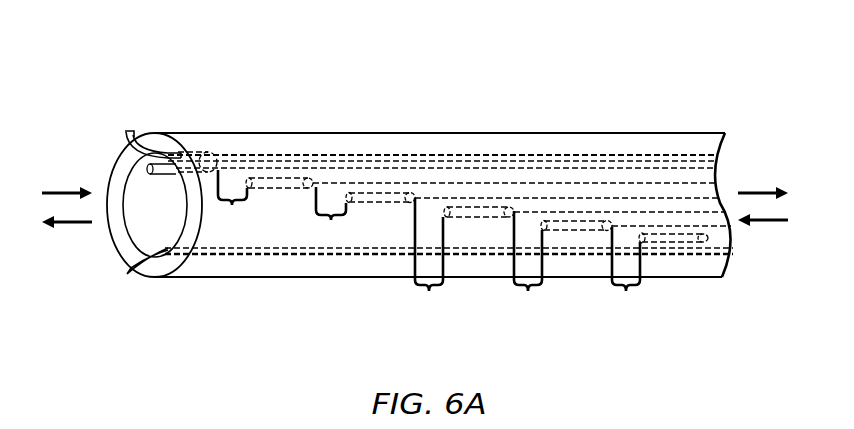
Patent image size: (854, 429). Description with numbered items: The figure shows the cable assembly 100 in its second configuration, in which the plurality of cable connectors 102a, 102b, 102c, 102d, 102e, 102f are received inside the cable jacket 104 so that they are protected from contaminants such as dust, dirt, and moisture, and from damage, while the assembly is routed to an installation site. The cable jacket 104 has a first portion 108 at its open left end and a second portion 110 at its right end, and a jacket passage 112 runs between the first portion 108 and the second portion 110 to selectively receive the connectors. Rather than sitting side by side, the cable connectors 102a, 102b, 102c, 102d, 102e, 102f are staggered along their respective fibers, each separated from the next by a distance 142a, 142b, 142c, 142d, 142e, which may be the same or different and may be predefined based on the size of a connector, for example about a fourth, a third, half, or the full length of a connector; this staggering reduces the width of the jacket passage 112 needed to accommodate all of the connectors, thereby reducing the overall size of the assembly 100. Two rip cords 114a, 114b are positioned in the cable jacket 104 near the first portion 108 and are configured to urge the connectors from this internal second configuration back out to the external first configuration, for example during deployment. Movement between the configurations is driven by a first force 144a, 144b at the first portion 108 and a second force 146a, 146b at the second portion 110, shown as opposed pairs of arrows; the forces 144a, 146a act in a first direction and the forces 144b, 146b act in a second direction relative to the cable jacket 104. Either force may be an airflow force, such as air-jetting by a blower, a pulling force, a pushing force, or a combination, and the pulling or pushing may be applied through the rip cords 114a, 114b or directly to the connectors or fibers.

The assembly 100 is at (613, 58).
The cable connector 102a is at (198, 152).
The cable connector 102b is at (283, 175).
The cable connector 102c is at (376, 189).
The cable connector 102d is at (472, 204).
The cable connector 102e is at (572, 216).
The cable connector 102f is at (669, 231).
The cable jacket 104 is at (173, 129).
The first portion 108 is at (110, 152).
The second portion 110 is at (728, 137).
The jacket passage 112 is at (697, 257).
The rip cord 114a is at (128, 131).
The rip cord 114b is at (129, 275).
The distance 142a is at (229, 201).
The distance 142b is at (330, 218).
The distance 142c is at (428, 260).
The distance 142d is at (528, 267).
The distance 142e is at (624, 276).
The first force 144a is at (58, 190).
The first force 144b is at (70, 225).
The second force 146a is at (752, 191).
The second force 146b is at (762, 223).